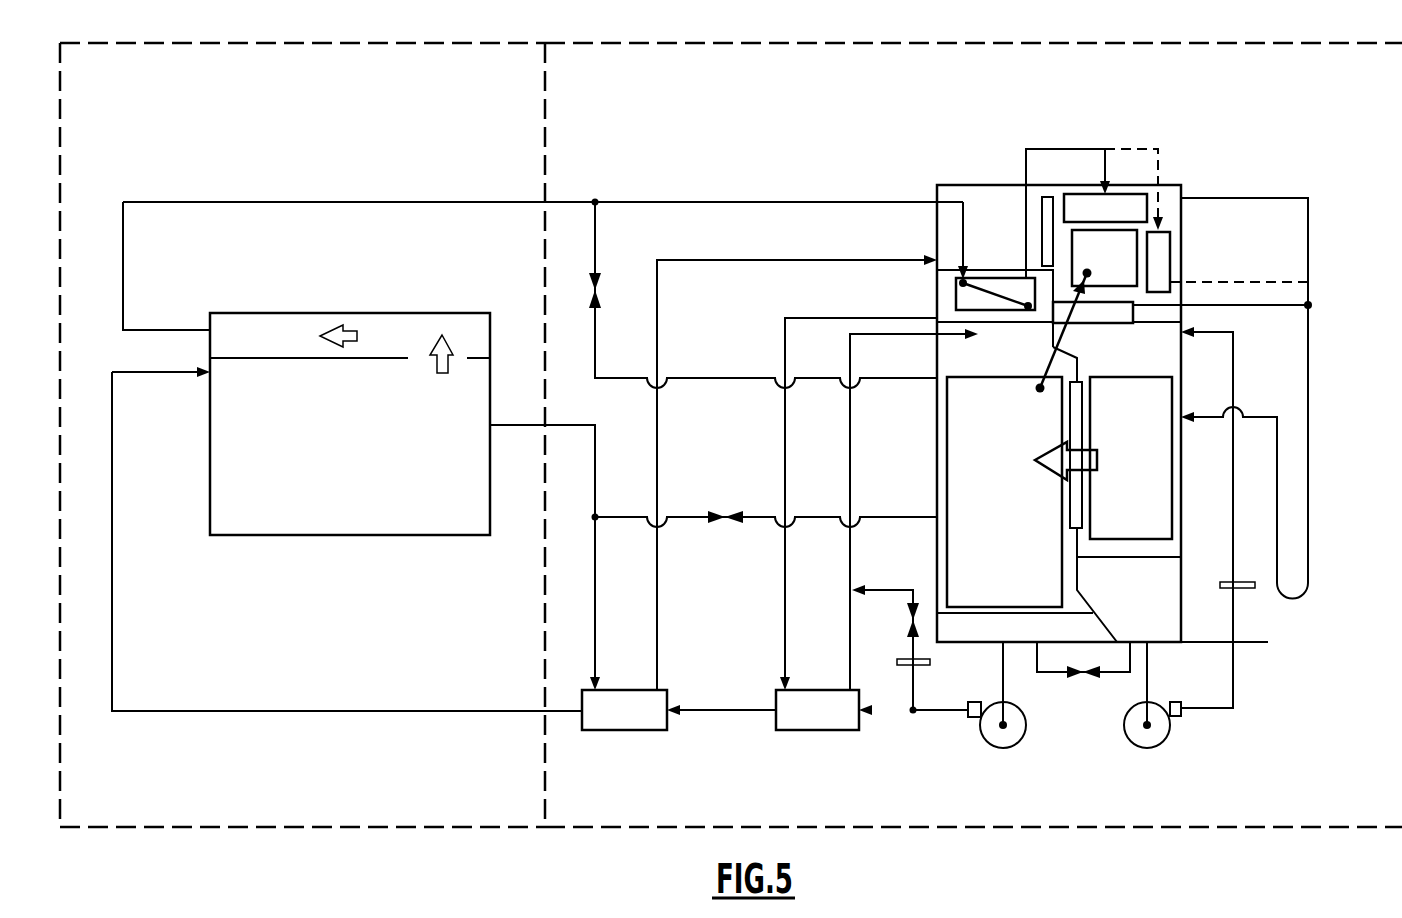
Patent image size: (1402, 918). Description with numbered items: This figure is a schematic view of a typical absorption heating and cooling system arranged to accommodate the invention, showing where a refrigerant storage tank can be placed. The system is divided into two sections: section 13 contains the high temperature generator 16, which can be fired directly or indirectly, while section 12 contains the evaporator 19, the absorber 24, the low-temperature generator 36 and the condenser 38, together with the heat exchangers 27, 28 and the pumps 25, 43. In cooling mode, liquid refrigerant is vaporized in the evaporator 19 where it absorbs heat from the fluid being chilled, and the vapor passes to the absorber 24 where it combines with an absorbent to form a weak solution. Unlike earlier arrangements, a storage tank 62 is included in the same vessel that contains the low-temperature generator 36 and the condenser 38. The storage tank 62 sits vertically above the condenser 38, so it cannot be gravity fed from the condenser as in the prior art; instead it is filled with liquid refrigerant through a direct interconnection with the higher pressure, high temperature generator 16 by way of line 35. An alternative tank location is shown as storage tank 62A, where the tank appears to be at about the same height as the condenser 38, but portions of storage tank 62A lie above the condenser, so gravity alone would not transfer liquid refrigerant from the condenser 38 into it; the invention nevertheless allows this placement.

The section 12 is at (690, 62).
The section 13 is at (418, 63).
The high temperature generator 16 is at (295, 522).
The evaporator 19 is at (1147, 428).
The absorber 24 is at (1020, 534).
The pump 25 is at (992, 737).
The heat exchanger 27 is at (822, 723).
The heat exchanger 28 is at (627, 723).
The line 35 is at (1067, 149).
The low-temperature generator 36 is at (982, 197).
The condenser 38 is at (1078, 248).
The pump 43 is at (1133, 737).
The storage tank 62 is at (1128, 195).
The storage tank 62A is at (1172, 252).